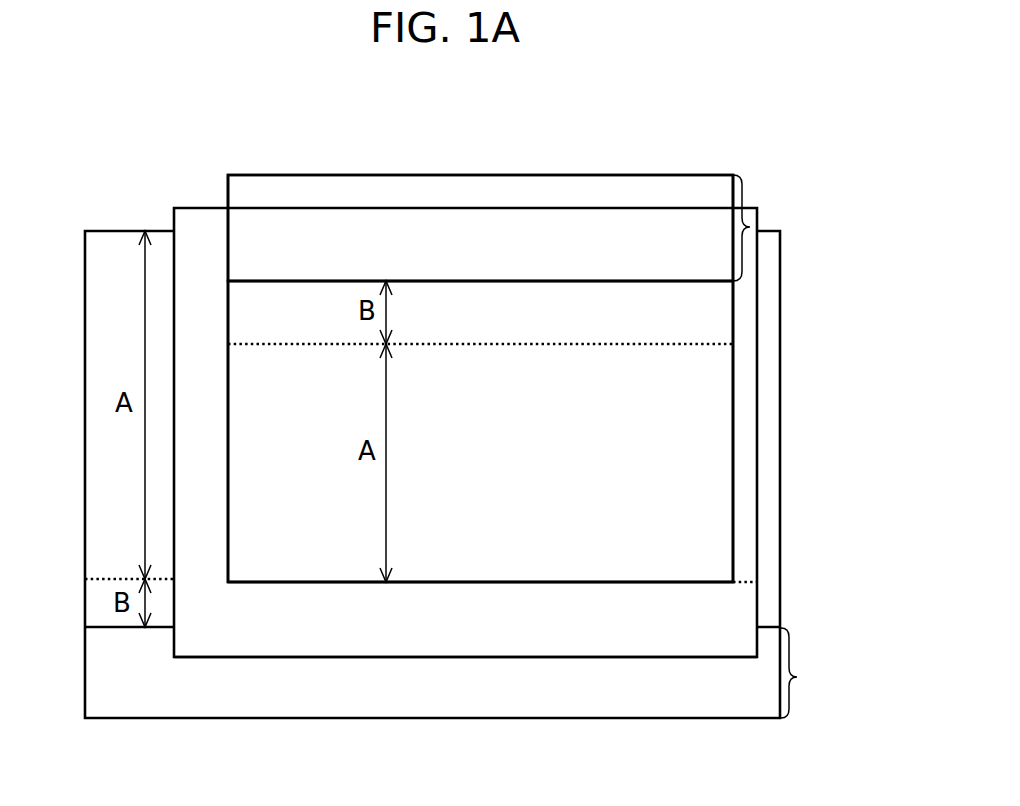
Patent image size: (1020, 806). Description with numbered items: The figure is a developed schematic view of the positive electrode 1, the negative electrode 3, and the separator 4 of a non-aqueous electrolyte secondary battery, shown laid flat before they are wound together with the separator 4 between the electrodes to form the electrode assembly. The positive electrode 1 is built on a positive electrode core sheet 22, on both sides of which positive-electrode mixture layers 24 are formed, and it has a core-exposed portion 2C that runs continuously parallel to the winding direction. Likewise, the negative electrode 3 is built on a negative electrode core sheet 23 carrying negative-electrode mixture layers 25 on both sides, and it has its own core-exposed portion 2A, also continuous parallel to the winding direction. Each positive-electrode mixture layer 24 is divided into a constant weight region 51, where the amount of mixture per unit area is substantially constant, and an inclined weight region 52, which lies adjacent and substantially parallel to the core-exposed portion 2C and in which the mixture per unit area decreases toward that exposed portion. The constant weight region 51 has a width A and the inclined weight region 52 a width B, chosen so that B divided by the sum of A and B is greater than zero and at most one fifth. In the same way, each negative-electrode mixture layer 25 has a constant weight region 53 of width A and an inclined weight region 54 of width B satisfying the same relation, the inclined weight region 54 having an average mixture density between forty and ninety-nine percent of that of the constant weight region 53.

The positive electrode 1 is at (677, 167).
The positive electrode core sheet 22 is at (522, 195).
The positive-electrode mixture layers 24 is at (713, 313).
The negative-electrode mixture layers 25 is at (770, 360).
The negative electrode 3 is at (788, 482).
The separator 4 is at (665, 635).
The core-exposed portion 2A is at (809, 673).
The core-exposed portion 2C is at (760, 213).
The constant weight region 51 is at (283, 560).
The inclined weight region 52 is at (252, 317).
The constant weight region 53 is at (100, 498).
The inclined weight region 54 is at (100, 595).
The negative electrode core sheet 23 is at (107, 678).